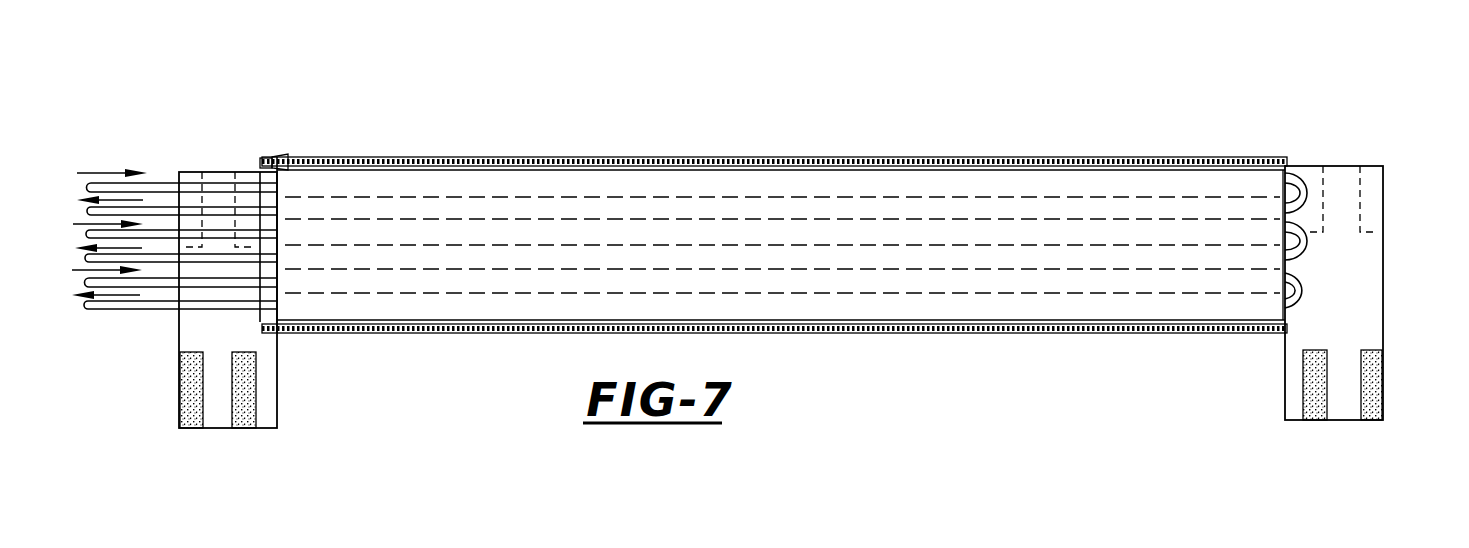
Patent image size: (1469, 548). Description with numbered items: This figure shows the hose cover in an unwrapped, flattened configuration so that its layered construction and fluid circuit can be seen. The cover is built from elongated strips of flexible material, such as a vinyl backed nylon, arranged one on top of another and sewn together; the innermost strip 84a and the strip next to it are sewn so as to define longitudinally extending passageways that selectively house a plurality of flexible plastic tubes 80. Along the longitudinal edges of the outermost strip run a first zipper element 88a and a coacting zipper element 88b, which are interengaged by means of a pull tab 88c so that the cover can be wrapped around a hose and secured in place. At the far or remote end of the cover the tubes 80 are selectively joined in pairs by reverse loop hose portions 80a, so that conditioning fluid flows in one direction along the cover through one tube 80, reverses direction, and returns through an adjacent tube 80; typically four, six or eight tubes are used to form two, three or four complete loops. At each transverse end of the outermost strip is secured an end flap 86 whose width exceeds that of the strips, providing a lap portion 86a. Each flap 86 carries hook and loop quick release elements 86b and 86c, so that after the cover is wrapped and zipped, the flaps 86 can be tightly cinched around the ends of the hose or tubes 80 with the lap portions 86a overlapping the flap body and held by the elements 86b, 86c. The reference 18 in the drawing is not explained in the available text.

The heat exchanger assembly 18 is at (166, 153).
The tubes 80 is at (160, 178).
The reverse loop hose portions 80a is at (1307, 190).
The innermost strip 84a is at (593, 216).
The end flaps 86 is at (217, 173).
The lap portion 86a is at (270, 360).
The hook and loop quick release element 86b is at (178, 383).
The hook and loop quick release element 86c is at (240, 170).
The first zipper element 88a is at (1033, 335).
The coacting zipper element 88b is at (1010, 157).
The pull tab 88c is at (277, 157).